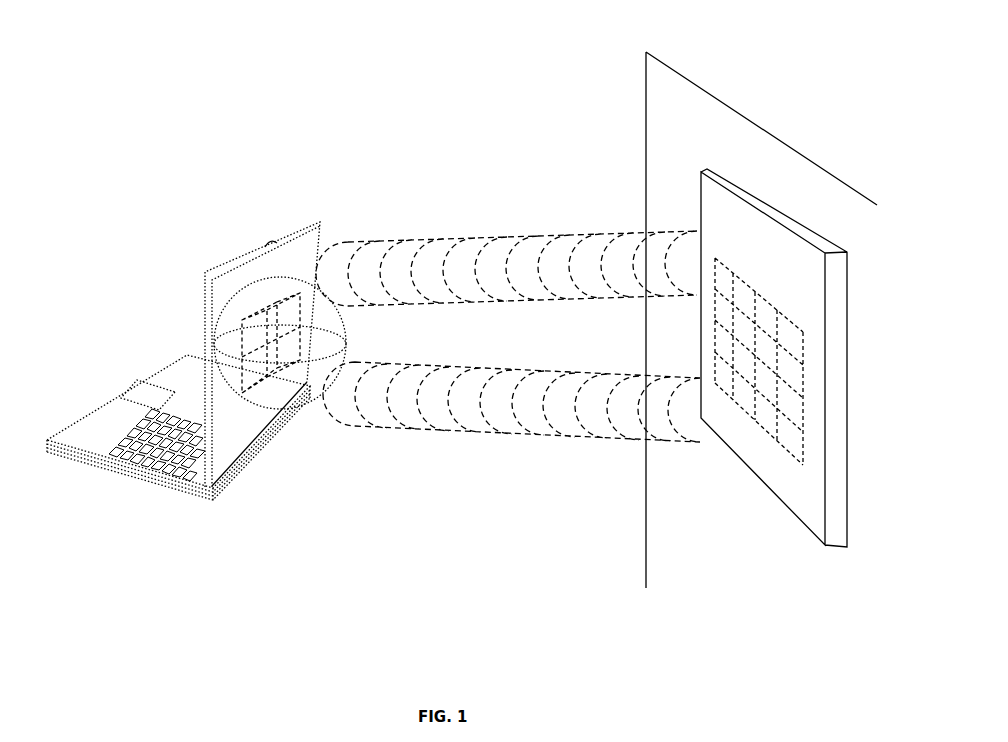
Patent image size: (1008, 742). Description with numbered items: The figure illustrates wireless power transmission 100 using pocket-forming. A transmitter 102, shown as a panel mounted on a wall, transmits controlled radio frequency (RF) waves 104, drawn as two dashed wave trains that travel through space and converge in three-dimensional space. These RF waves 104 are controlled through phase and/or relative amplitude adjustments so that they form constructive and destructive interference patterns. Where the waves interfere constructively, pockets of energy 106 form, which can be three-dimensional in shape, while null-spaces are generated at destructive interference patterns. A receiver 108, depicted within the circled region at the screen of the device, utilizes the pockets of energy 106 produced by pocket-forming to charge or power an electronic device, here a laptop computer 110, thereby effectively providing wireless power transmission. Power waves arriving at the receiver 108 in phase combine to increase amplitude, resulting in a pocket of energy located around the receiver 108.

The wireless power transmission 100 is at (208, 138).
The transmitter 102 is at (737, 190).
The RF waves 104 is at (402, 242).
The pockets of energy 106 is at (309, 405).
The receiver 108 is at (258, 313).
The laptop computer 110 is at (165, 470).